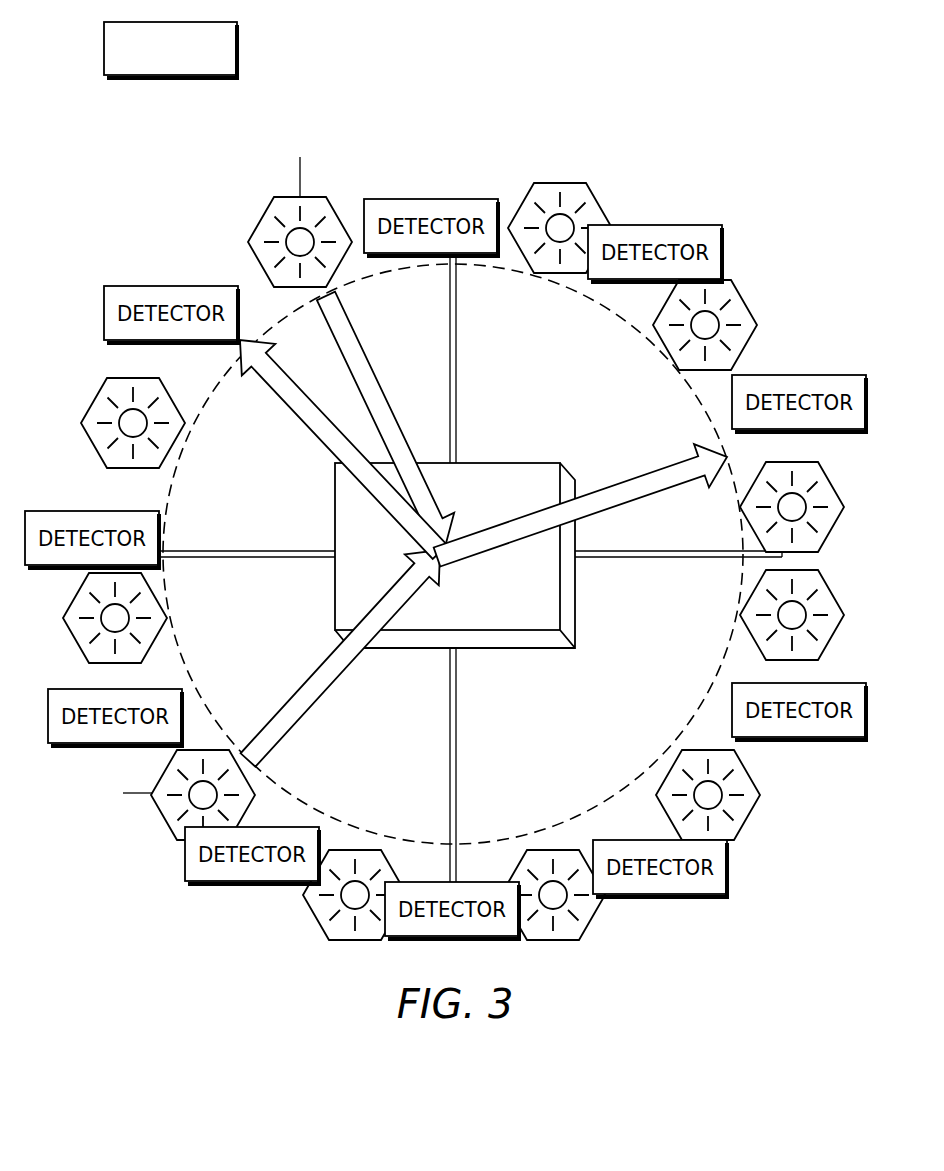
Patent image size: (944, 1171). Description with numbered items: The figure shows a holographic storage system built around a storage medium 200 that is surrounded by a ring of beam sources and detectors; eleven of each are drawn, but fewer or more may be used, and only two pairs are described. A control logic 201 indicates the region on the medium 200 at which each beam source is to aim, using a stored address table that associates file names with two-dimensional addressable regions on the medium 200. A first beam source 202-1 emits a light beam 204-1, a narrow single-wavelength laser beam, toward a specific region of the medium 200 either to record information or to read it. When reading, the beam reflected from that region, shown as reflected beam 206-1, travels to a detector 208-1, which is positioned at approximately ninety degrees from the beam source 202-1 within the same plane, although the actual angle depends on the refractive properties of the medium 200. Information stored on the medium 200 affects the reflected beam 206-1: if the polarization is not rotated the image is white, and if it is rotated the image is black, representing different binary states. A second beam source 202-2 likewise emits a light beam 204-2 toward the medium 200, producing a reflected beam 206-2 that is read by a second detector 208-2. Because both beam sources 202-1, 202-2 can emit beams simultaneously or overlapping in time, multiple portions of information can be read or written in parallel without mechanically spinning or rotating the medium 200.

The storage medium 200 is at (537, 463).
The control logic 201 is at (223, 22).
The beam source 202-1 is at (261, 219).
The beam source 202-2 is at (163, 818).
The light beam 204-1 is at (356, 330).
The light beam 204-2 is at (310, 678).
The reflected beam 206-1 is at (645, 473).
The reflected beam 206-2 is at (284, 396).
The detector 208-1 is at (817, 374).
The detector 208-2 is at (134, 285).